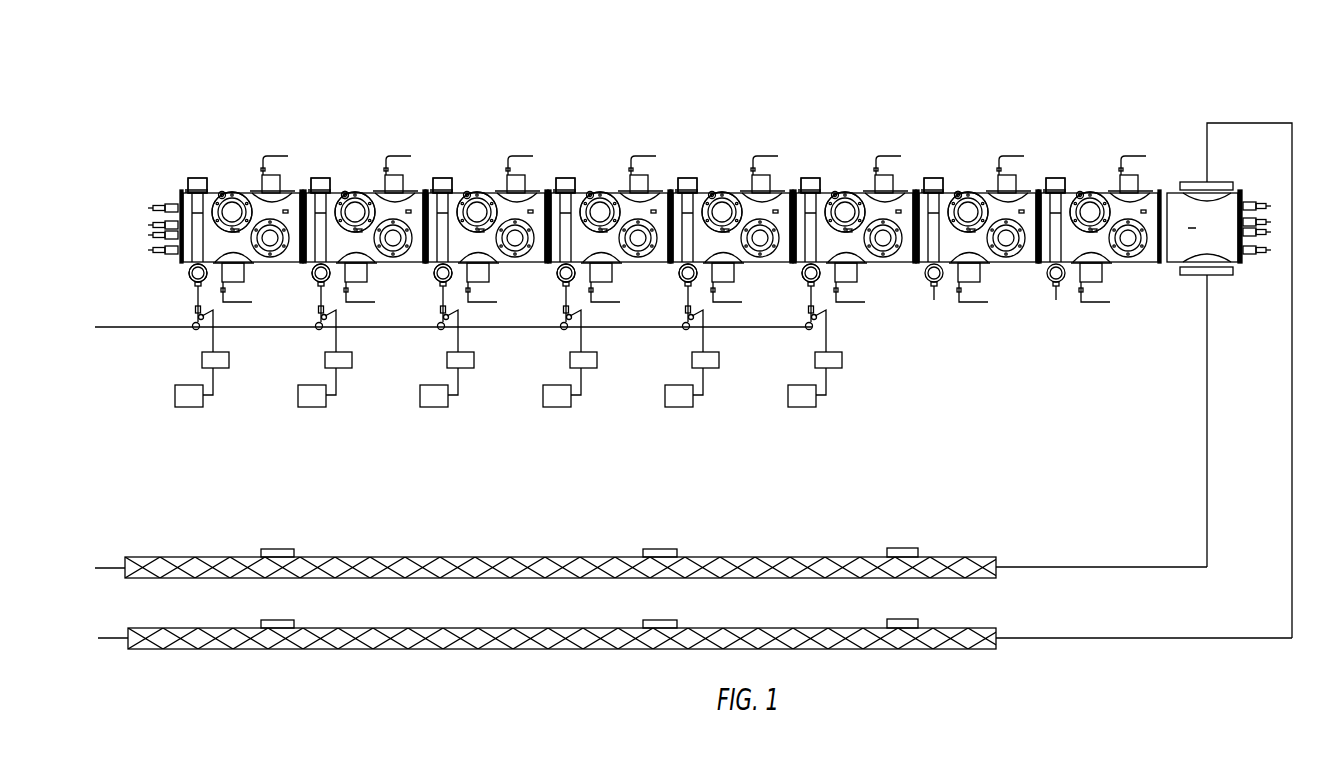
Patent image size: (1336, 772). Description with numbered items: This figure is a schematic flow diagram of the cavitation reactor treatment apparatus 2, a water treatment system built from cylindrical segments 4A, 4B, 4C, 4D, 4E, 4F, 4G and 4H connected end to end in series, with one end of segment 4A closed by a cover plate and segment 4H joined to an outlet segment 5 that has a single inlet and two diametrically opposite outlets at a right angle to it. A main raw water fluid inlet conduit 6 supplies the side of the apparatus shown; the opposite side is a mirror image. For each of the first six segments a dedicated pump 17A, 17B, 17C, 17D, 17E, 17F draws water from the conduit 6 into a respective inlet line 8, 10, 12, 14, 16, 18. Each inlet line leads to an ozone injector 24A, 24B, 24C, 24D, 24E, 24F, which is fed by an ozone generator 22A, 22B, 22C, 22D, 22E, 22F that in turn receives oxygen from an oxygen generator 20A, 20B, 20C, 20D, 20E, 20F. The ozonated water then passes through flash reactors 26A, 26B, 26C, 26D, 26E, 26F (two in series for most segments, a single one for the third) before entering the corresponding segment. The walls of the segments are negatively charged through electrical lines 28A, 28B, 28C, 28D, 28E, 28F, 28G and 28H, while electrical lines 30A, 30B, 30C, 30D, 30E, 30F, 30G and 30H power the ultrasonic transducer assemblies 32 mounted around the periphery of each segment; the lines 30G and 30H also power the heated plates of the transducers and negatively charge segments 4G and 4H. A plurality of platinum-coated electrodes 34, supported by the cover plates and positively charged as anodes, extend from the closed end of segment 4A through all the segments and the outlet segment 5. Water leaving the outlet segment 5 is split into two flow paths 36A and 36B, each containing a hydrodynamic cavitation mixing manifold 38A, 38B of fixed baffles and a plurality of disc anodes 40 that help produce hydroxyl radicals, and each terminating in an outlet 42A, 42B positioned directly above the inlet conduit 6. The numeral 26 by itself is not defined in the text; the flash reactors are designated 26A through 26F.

The treatment apparatus 2 is at (823, 72).
The cylindrical segment 4A is at (250, 262).
The cylindrical segment 4B is at (373, 262).
The cylindrical segment 4C is at (495, 262).
The cylindrical segment 4D is at (618, 262).
The cylindrical segment 4E is at (740, 262).
The cylindrical segment 4F is at (868, 263).
The cylindrical segment 4G is at (991, 263).
The cylindrical segment 4H is at (1111, 263).
The outlet segment 5 is at (1227, 207).
The main raw water fluid inlet conduit 6 is at (118, 325).
The inlet line 8 is at (215, 332).
The inlet line 10 is at (338, 332).
The inlet line 12 is at (460, 332).
The inlet line 14 is at (583, 332).
The inlet line 16 is at (705, 332).
The inlet line 18 is at (828, 332).
The pump 17A is at (193, 329).
The pump 17B is at (316, 329).
The pump 17C is at (438, 329).
The pump 17D is at (561, 329).
The pump 17E is at (683, 329).
The pump 17F is at (806, 329).
The oxygen generator 20A is at (190, 407).
The oxygen generator 20B is at (313, 407).
The oxygen generator 20C is at (435, 407).
The oxygen generator 20D is at (558, 407).
The oxygen generator 20E is at (680, 407).
The oxygen generator 20F is at (803, 407).
The ozone generator 22A is at (218, 368).
The ozone generator 22B is at (341, 368).
The ozone generator 22C is at (463, 368).
The ozone generator 22D is at (586, 368).
The ozone generator 22E is at (708, 368).
The ozone generator 22F is at (831, 368).
The ozone injector 24A is at (195, 309).
The ozone injector 24B is at (318, 309).
The ozone injector 24C is at (440, 309).
The ozone injector 24D is at (563, 309).
The ozone injector 24E is at (685, 309).
The ozone injector 24F is at (808, 309).
The connector 26 is at (152, 205).
The flash reactors 26A is at (189, 276).
The flash reactors 26B is at (312, 276).
The flash reactor 26C is at (434, 276).
The flash reactors 26D is at (557, 276).
The flash reactors 26E is at (679, 276).
The flash reactors 26F is at (802, 276).
The electrical line 28A is at (210, 192).
The electrical line 28B is at (333, 192).
The electrical line 28C is at (455, 192).
The electrical line 28D is at (578, 192).
The electrical line 28E is at (700, 192).
The electrical line 28F is at (823, 192).
The electrical line 28G is at (950, 191).
The electrical line 28H is at (1068, 192).
The electrical line 30A is at (232, 197).
The electrical line 30B is at (355, 197).
The electrical line 30C is at (477, 197).
The electrical line 30D is at (600, 197).
The electrical line 30E is at (722, 197).
The electrical line 30F is at (845, 197).
The power line 30G is at (968, 197).
The power line 30H is at (1090, 197).
The ultrasonic transducer assembly 32 is at (347, 193).
The electrodes 34 is at (150, 228).
The flow path 36A is at (1232, 123).
The flow path 36B is at (1209, 385).
The hydrodynamic cavitation mixing manifold 38A is at (562, 637).
The hydrodynamic cavitation mixing manifold 38B is at (570, 566).
The disc anodes 40 is at (283, 548).
The outlet 42A is at (138, 636).
The outlet 42B is at (122, 566).